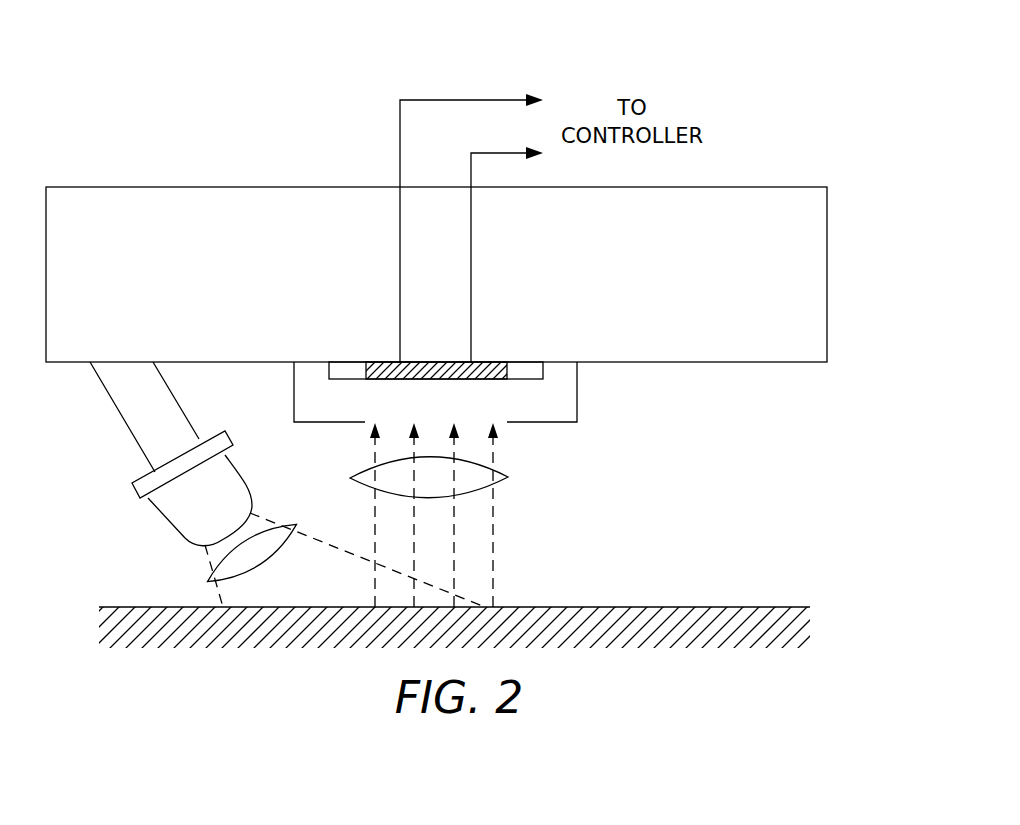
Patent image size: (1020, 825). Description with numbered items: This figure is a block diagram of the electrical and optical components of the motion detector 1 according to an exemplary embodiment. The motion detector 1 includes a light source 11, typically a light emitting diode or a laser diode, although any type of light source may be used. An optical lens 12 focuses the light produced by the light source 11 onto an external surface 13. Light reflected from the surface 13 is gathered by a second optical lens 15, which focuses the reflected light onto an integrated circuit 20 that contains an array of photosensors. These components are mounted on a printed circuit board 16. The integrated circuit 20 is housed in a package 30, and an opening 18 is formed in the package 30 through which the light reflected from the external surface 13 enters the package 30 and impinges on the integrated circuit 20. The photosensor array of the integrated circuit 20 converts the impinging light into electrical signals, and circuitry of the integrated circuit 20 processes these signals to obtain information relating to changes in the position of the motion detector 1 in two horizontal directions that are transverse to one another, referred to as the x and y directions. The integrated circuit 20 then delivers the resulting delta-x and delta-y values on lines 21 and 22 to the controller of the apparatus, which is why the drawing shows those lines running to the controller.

The motion detector 1 is at (790, 132).
The light source 11 is at (160, 514).
The optical lens 12 is at (287, 523).
The external surface 13 is at (778, 620).
The optical lens 15 is at (508, 477).
The printed circuit board 16 is at (143, 231).
The opening 18 is at (465, 413).
The integrated circuit 20 is at (488, 365).
The line 21 is at (400, 118).
The line 22 is at (508, 152).
The package 30 is at (294, 413).